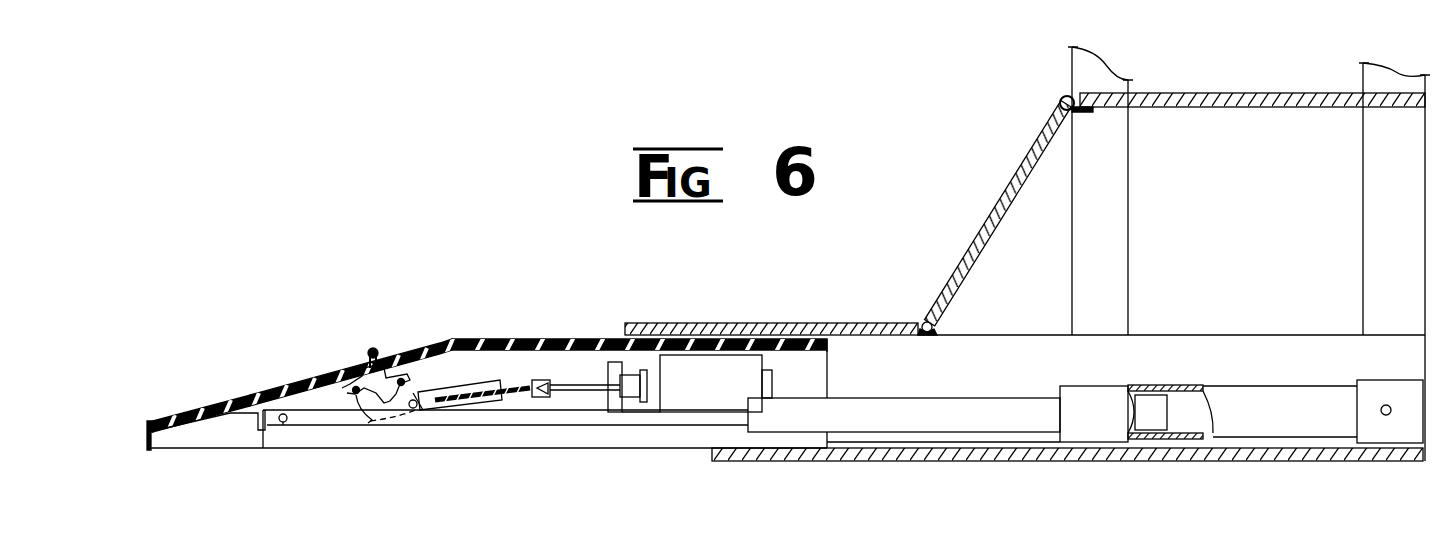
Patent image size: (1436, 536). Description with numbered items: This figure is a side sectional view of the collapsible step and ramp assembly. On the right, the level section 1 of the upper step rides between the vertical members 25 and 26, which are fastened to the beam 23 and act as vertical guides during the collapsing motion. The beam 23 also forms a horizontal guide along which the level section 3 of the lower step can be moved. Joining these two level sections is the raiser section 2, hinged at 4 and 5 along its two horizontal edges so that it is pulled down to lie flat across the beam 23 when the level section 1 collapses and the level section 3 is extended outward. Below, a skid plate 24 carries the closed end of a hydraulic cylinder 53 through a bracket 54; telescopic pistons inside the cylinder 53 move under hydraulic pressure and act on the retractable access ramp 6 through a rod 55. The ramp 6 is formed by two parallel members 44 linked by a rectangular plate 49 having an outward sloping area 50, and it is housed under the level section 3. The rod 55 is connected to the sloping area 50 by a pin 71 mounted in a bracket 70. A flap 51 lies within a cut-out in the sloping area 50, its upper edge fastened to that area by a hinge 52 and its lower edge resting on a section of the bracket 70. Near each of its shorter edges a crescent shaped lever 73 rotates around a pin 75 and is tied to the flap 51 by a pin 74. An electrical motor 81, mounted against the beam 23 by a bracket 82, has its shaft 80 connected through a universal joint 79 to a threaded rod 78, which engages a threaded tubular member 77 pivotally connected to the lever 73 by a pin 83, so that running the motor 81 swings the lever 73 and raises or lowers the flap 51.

The level section 1 is at (1266, 93).
The raiser section 2 is at (988, 220).
The level section 3 is at (840, 322).
The hinge 4 is at (1062, 95).
The hinge 5 is at (922, 321).
The retractable access ramp 6 is at (494, 341).
The beam 23 is at (1243, 334).
The skid plate 24 is at (1333, 461).
The vertical member 25 is at (1130, 213).
The vertical member 26 is at (1363, 214).
The parallel member 44 is at (828, 395).
The rectangular plate 49 is at (828, 344).
The sloping area 50 is at (245, 398).
The flap 51 is at (302, 383).
The hinge 52 is at (372, 348).
The hydraulic cylinder 53 is at (1308, 380).
The bracket 54 is at (1398, 378).
The rod 55 is at (542, 420).
The bracket 70 is at (256, 420).
The pin 71 is at (296, 428).
The crescent shaped lever 73 is at (376, 422).
The pin 74 is at (352, 392).
The pin 75 is at (405, 382).
The threaded tubular member 77 is at (480, 384).
The threaded rod 78 is at (520, 385).
The universal joint 79 is at (551, 362).
The shaft 80 is at (592, 384).
The electrical motor 81 is at (693, 353).
The bracket 82 is at (614, 360).
The pin 83 is at (415, 409).